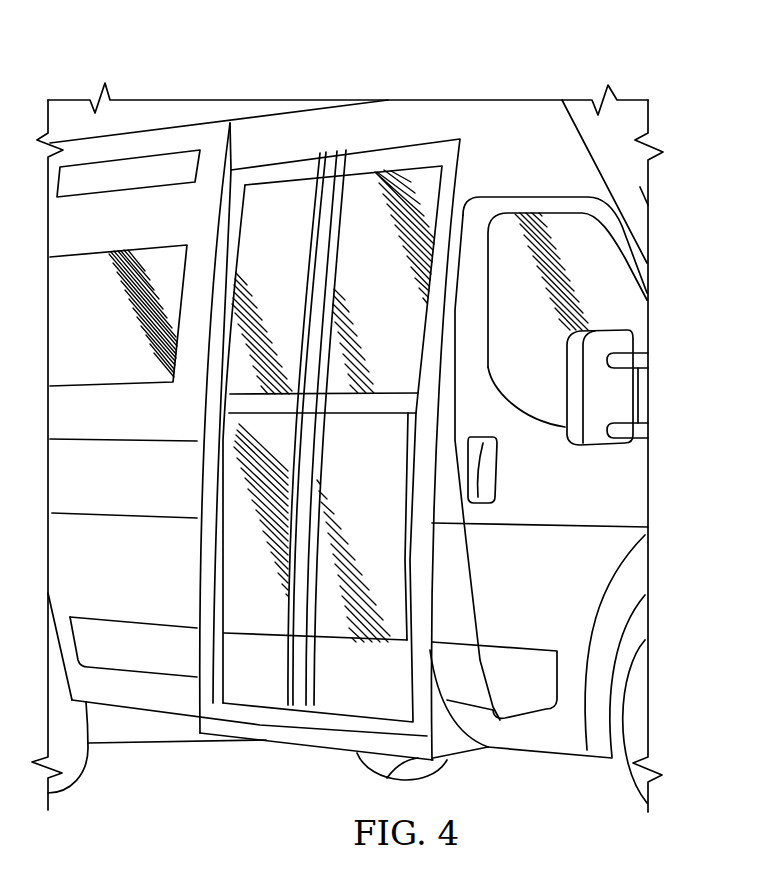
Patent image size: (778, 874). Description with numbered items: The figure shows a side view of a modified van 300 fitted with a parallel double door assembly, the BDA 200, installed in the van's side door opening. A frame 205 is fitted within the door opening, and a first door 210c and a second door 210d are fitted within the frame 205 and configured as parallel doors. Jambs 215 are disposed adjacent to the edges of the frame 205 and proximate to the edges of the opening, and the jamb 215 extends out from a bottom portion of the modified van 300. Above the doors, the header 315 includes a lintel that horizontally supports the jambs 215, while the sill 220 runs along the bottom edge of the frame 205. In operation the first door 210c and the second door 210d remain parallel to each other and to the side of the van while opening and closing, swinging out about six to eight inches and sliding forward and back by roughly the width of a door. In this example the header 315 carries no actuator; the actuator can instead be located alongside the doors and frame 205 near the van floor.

The modified van 300 is at (178, 60).
The BDA 200 is at (403, 133).
The frame 205 is at (461, 158).
The jamb 215 is at (455, 183).
The header 315 is at (305, 157).
The first door 210c is at (205, 563).
The second door 210d is at (420, 573).
The sill 220 is at (303, 747).